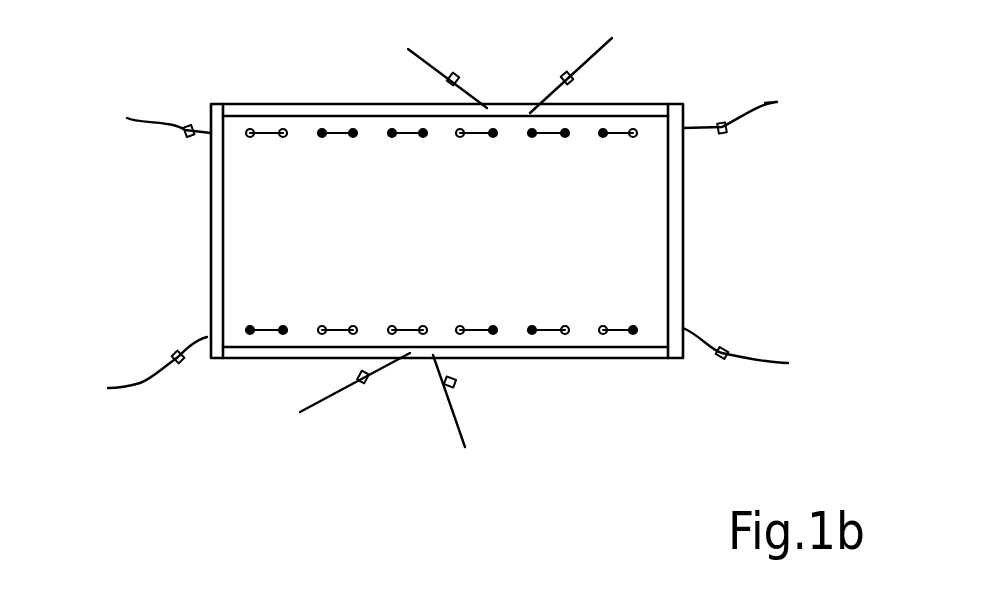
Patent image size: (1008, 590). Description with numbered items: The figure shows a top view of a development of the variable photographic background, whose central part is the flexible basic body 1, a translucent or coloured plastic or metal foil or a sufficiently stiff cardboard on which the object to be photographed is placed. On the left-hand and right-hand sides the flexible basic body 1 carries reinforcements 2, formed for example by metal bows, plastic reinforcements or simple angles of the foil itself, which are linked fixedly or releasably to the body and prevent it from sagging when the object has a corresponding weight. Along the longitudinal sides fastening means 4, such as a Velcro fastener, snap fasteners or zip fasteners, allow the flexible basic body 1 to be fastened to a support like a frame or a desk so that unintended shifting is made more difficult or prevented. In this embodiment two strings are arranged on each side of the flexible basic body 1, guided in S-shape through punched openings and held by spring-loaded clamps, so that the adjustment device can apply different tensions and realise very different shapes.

The flexible basic body 1 is at (270, 218).
The reinforcements 2 is at (210, 287).
The fastening means 4 is at (323, 112).